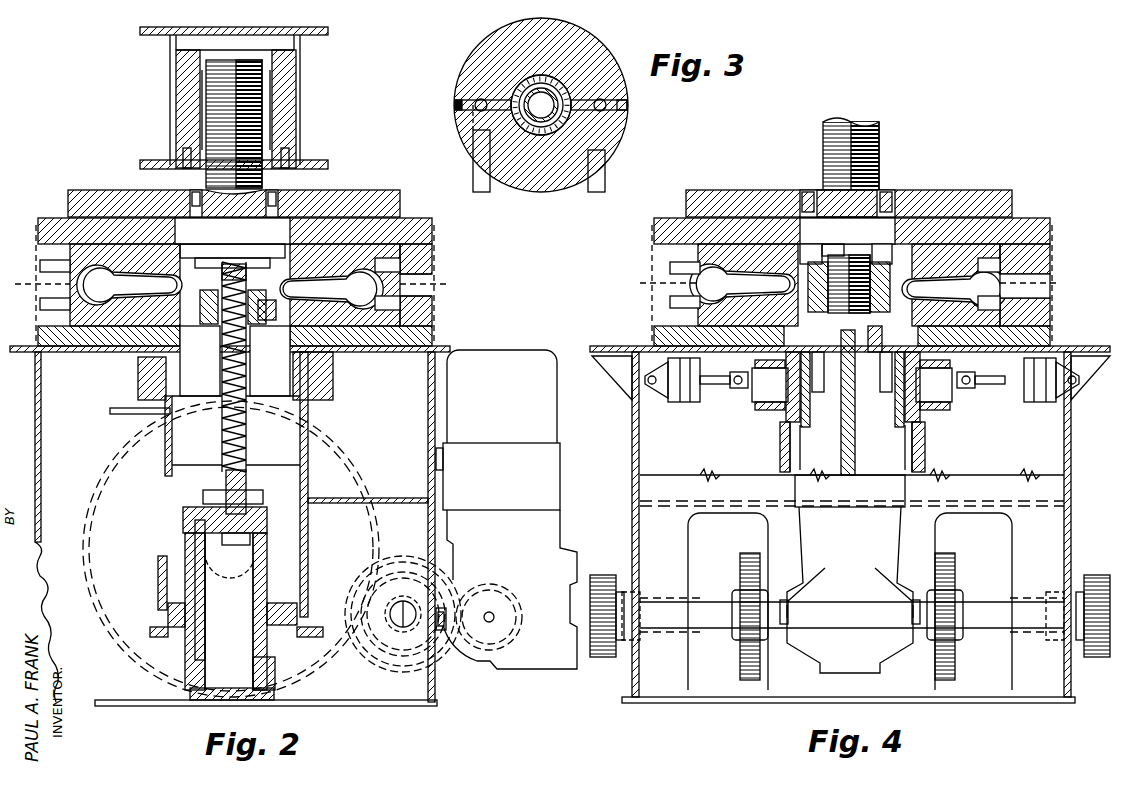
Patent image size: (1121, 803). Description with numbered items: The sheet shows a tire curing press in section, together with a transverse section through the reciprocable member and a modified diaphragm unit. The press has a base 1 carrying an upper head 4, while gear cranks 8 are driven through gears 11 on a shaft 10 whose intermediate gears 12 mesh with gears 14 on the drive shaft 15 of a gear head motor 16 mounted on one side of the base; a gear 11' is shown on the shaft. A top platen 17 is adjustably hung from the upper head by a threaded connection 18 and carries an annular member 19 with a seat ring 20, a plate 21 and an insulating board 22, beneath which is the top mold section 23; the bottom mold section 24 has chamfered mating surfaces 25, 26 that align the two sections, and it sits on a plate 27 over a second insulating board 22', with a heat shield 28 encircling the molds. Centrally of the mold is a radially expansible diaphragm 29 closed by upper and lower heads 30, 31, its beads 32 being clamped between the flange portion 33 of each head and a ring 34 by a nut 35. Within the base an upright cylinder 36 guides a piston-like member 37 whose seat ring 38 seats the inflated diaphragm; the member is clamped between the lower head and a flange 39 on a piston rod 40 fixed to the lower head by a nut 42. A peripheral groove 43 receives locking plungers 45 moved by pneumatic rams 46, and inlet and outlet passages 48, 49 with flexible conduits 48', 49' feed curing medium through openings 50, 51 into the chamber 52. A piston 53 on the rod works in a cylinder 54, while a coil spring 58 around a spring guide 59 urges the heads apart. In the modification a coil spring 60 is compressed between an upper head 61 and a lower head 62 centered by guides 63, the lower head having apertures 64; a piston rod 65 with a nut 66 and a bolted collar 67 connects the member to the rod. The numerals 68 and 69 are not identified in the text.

In FIG. 2, the base 1 is at (35, 405).
In FIG. 4, the base 1 is at (1071, 420).
In FIG. 2, the upper head 4 is at (300, 110).
In FIG. 2, the gear cranks 8 is at (328, 660).
In FIG. 2, the shaft 10 is at (395, 630).
In FIG. 4, the shaft 10 is at (716, 622).
In FIG. 4, the gears 11 is at (850, 634).
In FIG. 2, the gear 11' is at (390, 646).
In FIG. 2, the intermediate gears 12 is at (440, 650).
In FIG. 4, the intermediate gears 12 is at (740, 670).
In FIG. 2, the gears 14 is at (508, 595).
In FIG. 4, the gears 14 is at (740, 578).
In FIG. 2, the drive shaft 15 is at (494, 613).
In FIG. 4, the drive shaft 15 is at (925, 628).
In FIG. 2, the drive gear head motor 16 is at (540, 487).
In FIG. 4, the drive gear head motor 16 is at (850, 574).
In FIG. 2, the top platen 17 is at (350, 196).
In FIG. 4, the top platen 17 is at (932, 196).
In FIG. 2, the threaded connection 18 is at (272, 92).
In FIG. 4, the threaded connection 18 is at (872, 135).
In FIG. 2, the annular member 19 is at (286, 232).
In FIG. 4, the annular member 19 is at (938, 233).
In FIG. 2, the seat ring 20 is at (345, 277).
In FIG. 4, the seat ring 20 is at (956, 275).
In FIG. 2, the plate 21 is at (412, 228).
In FIG. 4, the plate 21 is at (1030, 226).
In FIG. 2, the insulating board 22 is at (19, 281).
In FIG. 4, the insulating board 22 is at (654, 267).
In FIG. 2, the insulating board 22' is at (229, 360).
In FIG. 4, the insulating board 22' is at (850, 342).
In FIG. 2, the top mold section 23 is at (385, 270).
In FIG. 4, the top mold section 23 is at (1010, 268).
In FIG. 2, the bottom mold section 24 is at (375, 313).
In FIG. 4, the bottom mold section 24 is at (1000, 312).
In FIG. 2, the chamfered mating surface 25 is at (384, 282).
In FIG. 4, the chamfered mating surface 25 is at (1005, 287).
In FIG. 2, the chamfered mating surface 26 is at (384, 285).
In FIG. 4, the chamfered mating surface 26 is at (1048, 286).
In FIG. 2, the plate 27 is at (420, 336).
In FIG. 4, the plate 27 is at (1040, 330).
In FIG. 2, the heat shield 28 is at (434, 307).
In FIG. 4, the heat shield 28 is at (1050, 340).
In FIG. 2, the diaphragm 29 is at (100, 300).
In FIG. 4, the diaphragm 29 is at (710, 302).
In FIG. 2, the upper head 30 is at (221, 258).
In FIG. 2, the lower head 31 is at (206, 320).
In FIG. 2, the beads 32 is at (192, 280).
In FIG. 2, the flange portion 33 is at (265, 282).
In FIG. 2, the ring 34 is at (130, 248).
In FIG. 4, the ring 34 is at (800, 270).
In FIG. 2, the nut 35 is at (180, 220).
In FIG. 4, the nut 35 is at (813, 245).
In FIG. 2, the cylinder 36 is at (308, 551).
In FIG. 4, the cylinder 36 is at (925, 440).
In FIG. 2, the piston-like member 37 is at (300, 442).
In FIG. 3, the piston-like member 37 is at (618, 146).
In FIG. 4, the piston-like member 37 is at (912, 444).
In FIG. 2, the seat ring 38 is at (272, 318).
In FIG. 4, the seat ring 38 is at (884, 352).
In FIG. 2, the flange 39 is at (212, 330).
In FIG. 2, the piston rod 40 is at (222, 432).
In FIG. 3, the piston rod 40 is at (546, 122).
In FIG. 2, the nut 42 is at (241, 272).
In FIG. 2, the peripheral groove 43 is at (333, 378).
In FIG. 4, the peripheral groove 43 is at (786, 410).
In FIG. 4, the locking plungers 45 is at (760, 385).
In FIG. 4, the double acting pneumatic rams 46 is at (685, 402).
In FIG. 3, the inlet passage 48 is at (617, 105).
In FIG. 4, the inlet passage 48 is at (881, 389).
In FIG. 3, the flexible conduit 48' is at (611, 171).
In FIG. 2, the outlet passage 49 is at (129, 422).
In FIG. 3, the outlet passage 49 is at (470, 107).
In FIG. 4, the outlet passage 49 is at (818, 389).
In FIG. 3, the flexible conduit 49' is at (497, 158).
In FIG. 2, the openings 50 is at (258, 325).
In FIG. 3, the openings 50 is at (555, 85).
In FIG. 2, the openings 51 is at (233, 299).
In FIG. 3, the openings 51 is at (520, 88).
In FIG. 2, the chamber 52 is at (403, 283).
In FIG. 4, the chamber 52 is at (976, 285).
In FIG. 2, the piston 53 is at (250, 536).
In FIG. 2, the cylinder 54 is at (272, 679).
In FIG. 2, the coil spring 58 is at (222, 453).
In FIG. 2, the spring guide 59 is at (237, 258).
In FIG. 4, the coil spring 60 is at (872, 284).
In FIG. 4, the upper head 61 is at (860, 248).
In FIG. 4, the lower head 62 is at (905, 287).
In FIG. 4, the guides 63 is at (826, 283).
In FIG. 4, the apertures 64 is at (875, 370).
In FIG. 4, the piston rod 65 is at (841, 436).
In FIG. 4, the nut 66 is at (882, 244).
In FIG. 4, the collar 67 is at (823, 372).
In FIG. 2, the piston 68 is at (200, 606).
In FIG. 2, the bottom cap 69 is at (200, 700).